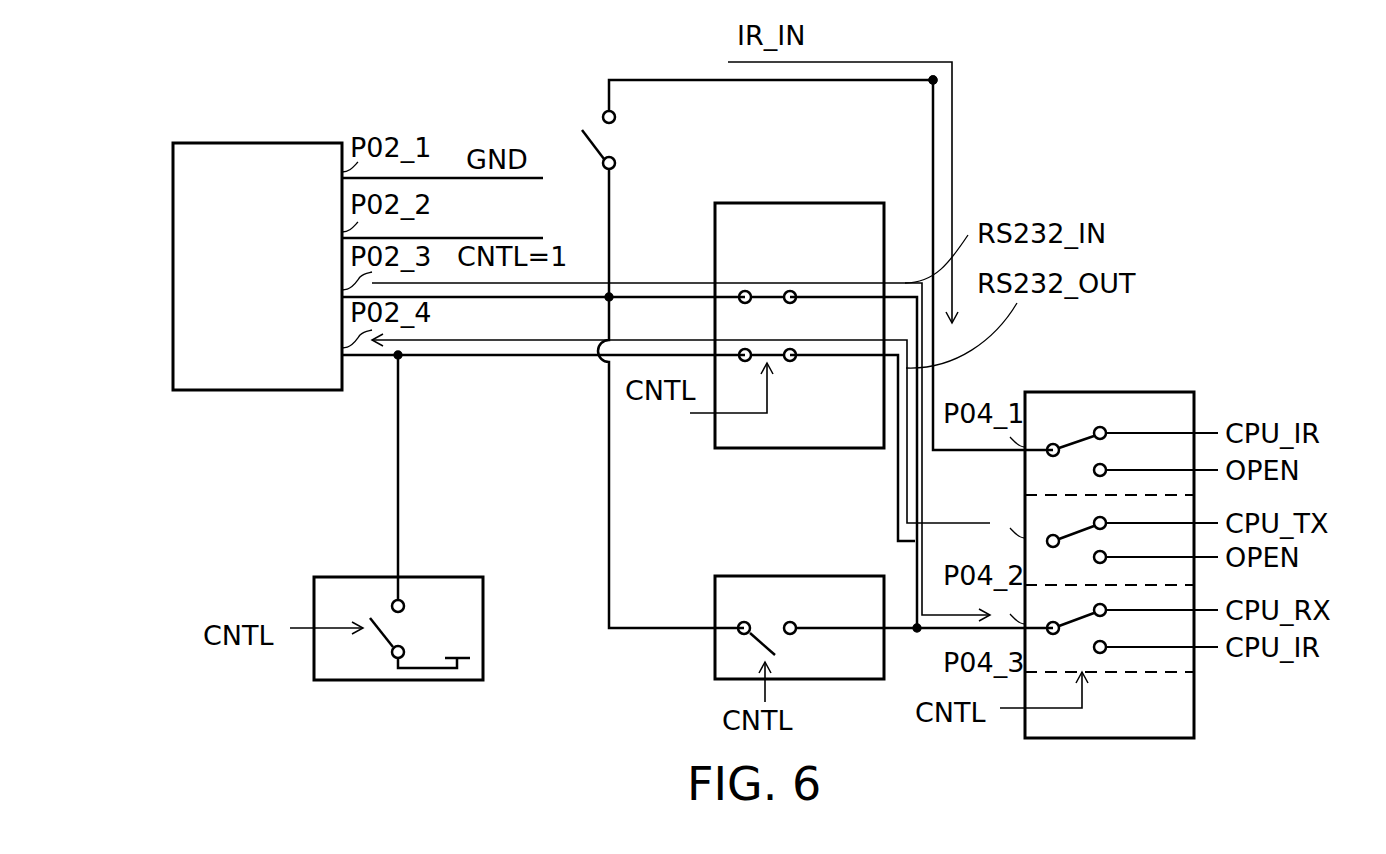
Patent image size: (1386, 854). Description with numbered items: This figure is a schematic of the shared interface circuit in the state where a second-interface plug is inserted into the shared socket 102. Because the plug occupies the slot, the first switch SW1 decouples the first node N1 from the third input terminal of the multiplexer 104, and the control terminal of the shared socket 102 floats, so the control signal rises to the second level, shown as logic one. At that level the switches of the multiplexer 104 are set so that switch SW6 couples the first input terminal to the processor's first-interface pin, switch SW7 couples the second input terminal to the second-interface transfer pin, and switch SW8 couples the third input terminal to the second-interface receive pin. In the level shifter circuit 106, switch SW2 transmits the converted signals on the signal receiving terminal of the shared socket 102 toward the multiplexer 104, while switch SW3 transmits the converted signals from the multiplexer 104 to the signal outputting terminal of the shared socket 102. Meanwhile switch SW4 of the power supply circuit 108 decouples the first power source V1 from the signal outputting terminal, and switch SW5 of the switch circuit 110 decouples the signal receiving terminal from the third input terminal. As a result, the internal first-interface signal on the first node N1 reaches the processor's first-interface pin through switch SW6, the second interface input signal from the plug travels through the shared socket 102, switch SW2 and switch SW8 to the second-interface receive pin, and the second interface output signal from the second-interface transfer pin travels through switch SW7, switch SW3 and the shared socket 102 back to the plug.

The shared socket 102 is at (176, 143).
The multiplexer 104 is at (1028, 392).
The level shifter circuit 106 is at (718, 203).
The power supply circuit 108 is at (316, 680).
The switch circuit 110 is at (718, 576).
The first switch SW1 is at (620, 137).
The switch of the level shifter circuit SW2 is at (767, 288).
The switch of the level shifter circuit SW3 is at (767, 348).
The switch of the power supply circuit SW4 is at (412, 615).
The switch of the switch circuit SW5 is at (767, 620).
The switch of the multiplexer SW6 is at (1096, 450).
The switch of the multiplexer SW7 is at (1096, 541).
The switch of the multiplexer SW8 is at (1096, 628).
The first node N1 is at (928, 86).
The first power source V1 is at (435, 645).